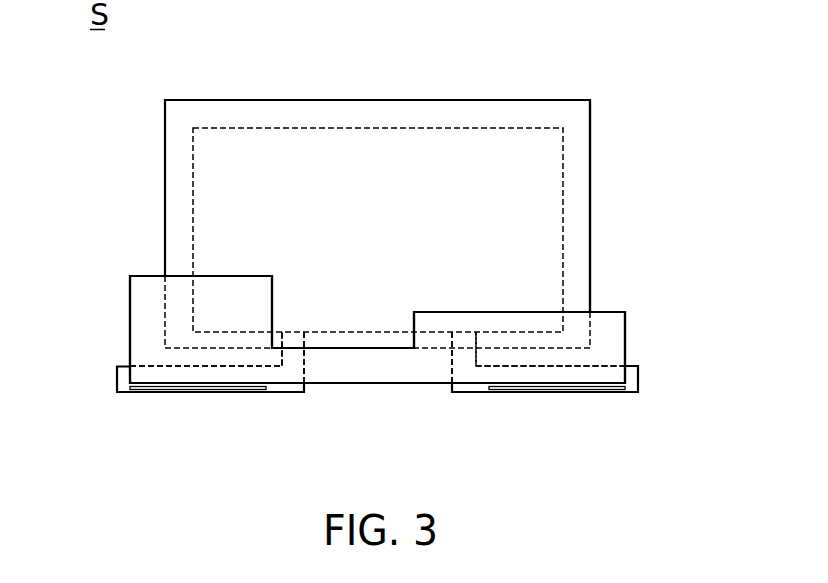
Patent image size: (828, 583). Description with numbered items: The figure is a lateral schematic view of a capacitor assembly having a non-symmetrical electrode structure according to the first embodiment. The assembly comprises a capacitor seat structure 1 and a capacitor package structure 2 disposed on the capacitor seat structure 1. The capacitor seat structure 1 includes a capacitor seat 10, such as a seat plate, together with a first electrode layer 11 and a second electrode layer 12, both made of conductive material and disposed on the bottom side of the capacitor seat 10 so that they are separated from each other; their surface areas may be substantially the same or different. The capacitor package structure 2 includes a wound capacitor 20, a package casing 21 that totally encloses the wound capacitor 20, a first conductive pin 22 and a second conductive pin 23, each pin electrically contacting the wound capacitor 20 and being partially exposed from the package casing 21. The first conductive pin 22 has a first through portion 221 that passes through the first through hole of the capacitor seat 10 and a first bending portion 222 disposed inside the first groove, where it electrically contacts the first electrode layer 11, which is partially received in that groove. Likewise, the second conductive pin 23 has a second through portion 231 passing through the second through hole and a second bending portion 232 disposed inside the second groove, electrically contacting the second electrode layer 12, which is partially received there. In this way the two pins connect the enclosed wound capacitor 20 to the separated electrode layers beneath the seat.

The capacitor seat structure 1 is at (622, 302).
The capacitor seat 10 is at (627, 338).
The first electrode layer 11 is at (161, 387).
The second electrode layer 12 is at (595, 387).
The capacitor package structure 2 is at (600, 128).
The wound capacitor 20 is at (562, 174).
The package casing 21 is at (594, 230).
The first conductive pin 22 is at (112, 371).
The first through portion 221 is at (292, 357).
The first bending portion 222 is at (215, 373).
The second conductive pin 23 is at (642, 376).
The second through portion 231 is at (463, 357).
The second bending portion 232 is at (542, 372).